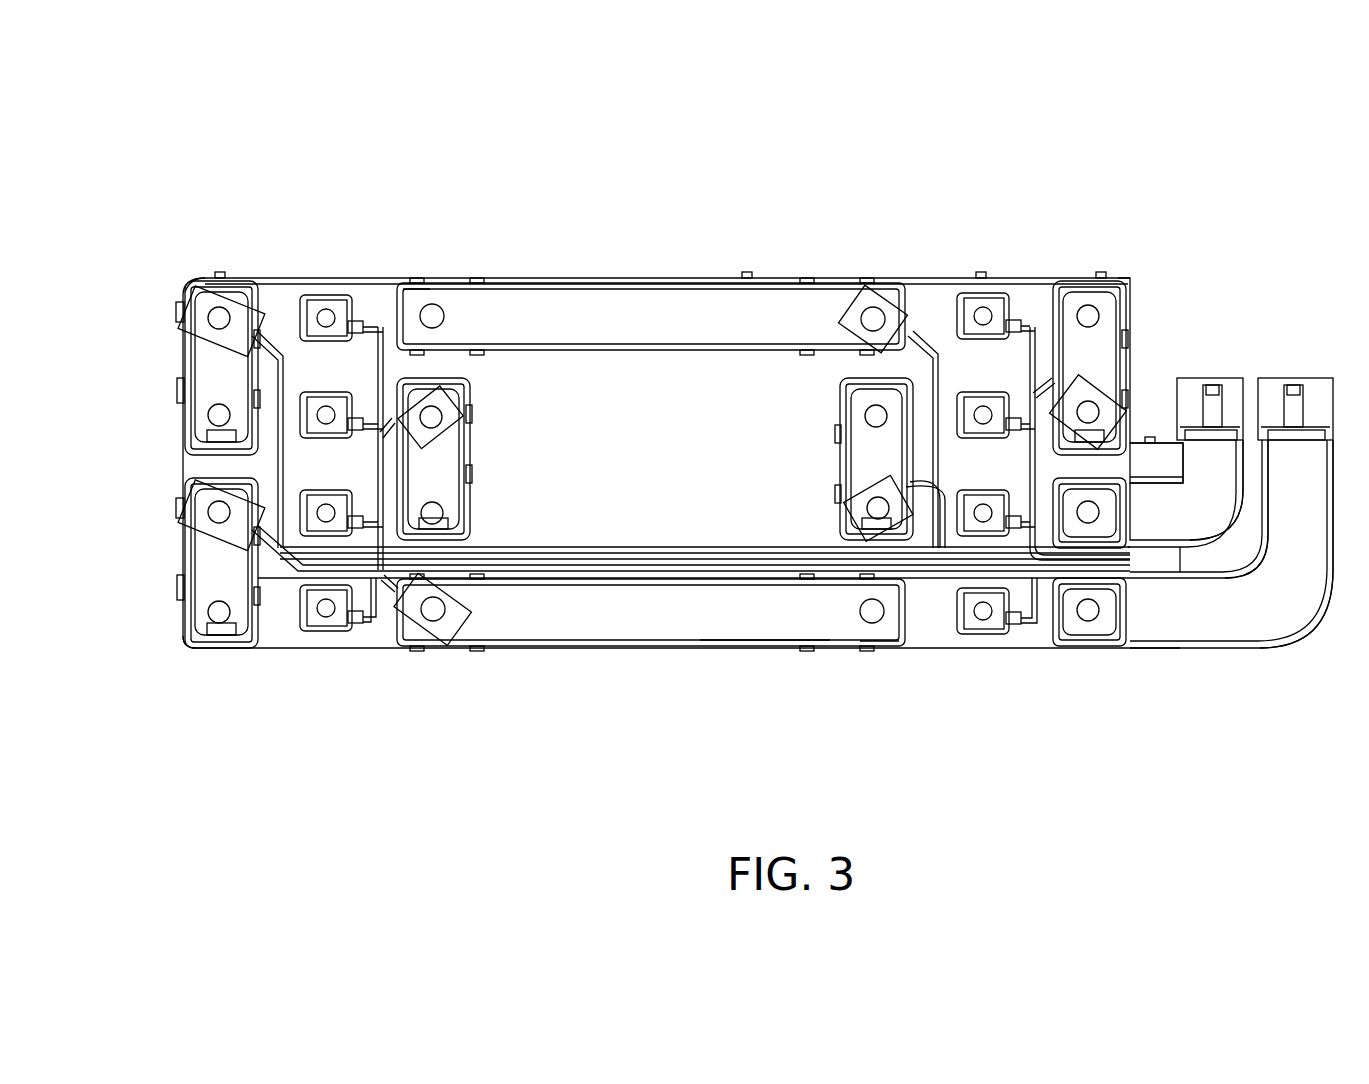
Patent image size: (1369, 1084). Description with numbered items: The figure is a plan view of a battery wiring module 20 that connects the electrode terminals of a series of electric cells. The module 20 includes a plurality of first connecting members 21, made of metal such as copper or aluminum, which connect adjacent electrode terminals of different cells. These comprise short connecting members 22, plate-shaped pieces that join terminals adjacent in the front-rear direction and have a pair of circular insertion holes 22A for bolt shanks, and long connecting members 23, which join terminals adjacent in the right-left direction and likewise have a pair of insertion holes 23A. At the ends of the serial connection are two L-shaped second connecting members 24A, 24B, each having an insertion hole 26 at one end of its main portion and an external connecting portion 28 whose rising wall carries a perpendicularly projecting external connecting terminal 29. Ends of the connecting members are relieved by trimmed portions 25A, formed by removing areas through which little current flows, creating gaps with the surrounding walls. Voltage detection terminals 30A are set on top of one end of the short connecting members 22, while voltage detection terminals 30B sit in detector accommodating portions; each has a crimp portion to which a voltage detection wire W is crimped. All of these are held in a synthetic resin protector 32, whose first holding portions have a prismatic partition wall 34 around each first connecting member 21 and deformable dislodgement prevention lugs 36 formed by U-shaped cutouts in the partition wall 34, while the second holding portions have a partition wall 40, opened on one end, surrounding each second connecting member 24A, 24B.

The battery wiring module 20 is at (736, 208).
The first connecting member 21 is at (601, 439).
The short connecting member 22 is at (1070, 317).
The long connecting member 23 is at (592, 308).
The circular insertion hole 22A is at (226, 620).
The insertion hole 23A is at (428, 310).
The second connecting member 24A is at (1152, 510).
The second connecting member 24B is at (1245, 620).
The trimmed portion 25A is at (186, 648).
The insertion hole 26 is at (1097, 613).
The external connecting portion 28 is at (1228, 420).
The external connecting terminal 29 is at (1200, 405).
The voltage detection terminal 30A is at (445, 395).
The voltage detection terminal 30B is at (336, 318).
The resin protector 32 is at (768, 640).
The partition wall 34 is at (205, 282).
The dislodgement prevention lug 36 is at (187, 342).
The partition wall 40 is at (1145, 650).
The voltage detection wire W is at (288, 345).